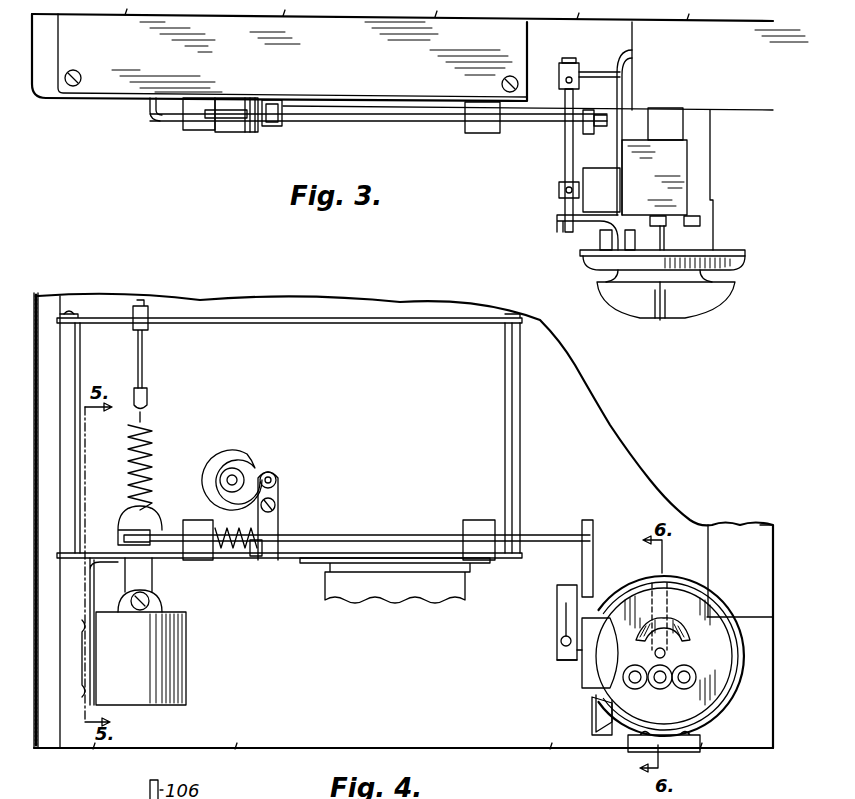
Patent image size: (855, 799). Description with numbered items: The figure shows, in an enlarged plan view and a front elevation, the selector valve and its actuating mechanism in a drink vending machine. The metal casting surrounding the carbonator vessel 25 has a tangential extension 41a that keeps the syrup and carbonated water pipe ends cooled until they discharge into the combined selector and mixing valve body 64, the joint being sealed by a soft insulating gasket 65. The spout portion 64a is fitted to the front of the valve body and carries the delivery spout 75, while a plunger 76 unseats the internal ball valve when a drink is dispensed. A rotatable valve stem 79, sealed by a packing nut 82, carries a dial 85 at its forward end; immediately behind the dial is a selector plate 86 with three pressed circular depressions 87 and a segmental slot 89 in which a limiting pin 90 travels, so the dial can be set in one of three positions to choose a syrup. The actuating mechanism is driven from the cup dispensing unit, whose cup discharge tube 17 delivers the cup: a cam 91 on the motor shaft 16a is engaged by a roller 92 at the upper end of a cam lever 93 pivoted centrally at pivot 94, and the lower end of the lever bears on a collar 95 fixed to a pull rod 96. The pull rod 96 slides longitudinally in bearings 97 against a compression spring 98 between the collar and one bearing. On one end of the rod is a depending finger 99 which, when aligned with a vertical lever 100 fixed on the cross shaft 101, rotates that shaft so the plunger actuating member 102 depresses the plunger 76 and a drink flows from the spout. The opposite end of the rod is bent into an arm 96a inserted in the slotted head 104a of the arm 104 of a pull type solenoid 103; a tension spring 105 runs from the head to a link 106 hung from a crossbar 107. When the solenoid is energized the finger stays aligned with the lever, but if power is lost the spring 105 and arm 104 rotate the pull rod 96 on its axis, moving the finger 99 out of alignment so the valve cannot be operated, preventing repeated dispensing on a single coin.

In FIG. 3, the motor shaft 16a is at (238, 140).
In FIG. 4, the motor shaft 16a is at (240, 478).
In FIG. 4, the cup discharge tube 17 is at (348, 596).
In FIG. 4, the carbonator vessel 25 is at (736, 535).
In FIG. 3, the tangential extension 41a is at (712, 98).
In FIG. 4, the tangential extension 41a is at (637, 742).
In FIG. 3, the selector and mixing valve body 64 is at (681, 162).
In FIG. 3, the spout portion 64a is at (596, 204).
In FIG. 4, the spout portion 64a is at (588, 682).
In FIG. 3, the gasket 65 is at (672, 118).
In FIG. 4, the delivery spout 75 is at (597, 720).
In FIG. 3, the plunger 76 is at (588, 196).
In FIG. 4, the plunger 76 is at (583, 669).
In FIG. 3, the valve stem 79 is at (668, 238).
In FIG. 4, the valve stem 79 is at (654, 654).
In FIG. 3, the packing nut 82 is at (678, 220).
In FIG. 3, the dial 85 is at (688, 298).
In FIG. 3, the selector plate 86 is at (741, 253).
In FIG. 4, the selector plate 86 is at (720, 666).
In FIG. 3, the circular depressions 87 is at (700, 249).
In FIG. 4, the circular depressions 87 is at (680, 664).
In FIG. 4, the segmental slot 89 is at (674, 634).
In FIG. 3, the limiting pin 90 is at (629, 237).
In FIG. 3, the cam 91 is at (232, 108).
In FIG. 4, the cam 91 is at (220, 456).
In FIG. 3, the roller 92 is at (279, 121).
In FIG. 4, the roller 92 is at (279, 478).
In FIG. 4, the cam lever 93 is at (280, 519).
In FIG. 4, the pivot 94 is at (278, 503).
In FIG. 4, the collar 95 is at (252, 556).
In FIG. 3, the pull rod 96 is at (340, 117).
In FIG. 4, the pull rod 96 is at (366, 535).
In FIG. 3, the bent end arm 96a is at (150, 104).
In FIG. 3, the bearings 97 is at (195, 130).
In FIG. 4, the bearings 97 is at (193, 524).
In FIG. 4, the compression spring 98 is at (226, 552).
In FIG. 3, the finger 99 is at (590, 130).
In FIG. 4, the finger 99 is at (593, 579).
In FIG. 3, the vertical lever 100 is at (562, 126).
In FIG. 4, the vertical lever 100 is at (559, 590).
In FIG. 3, the cross shaft 101 is at (566, 162).
In FIG. 4, the cross shaft 101 is at (561, 641).
In FIG. 3, the plunger actuating member 102 is at (559, 190).
In FIG. 4, the plunger actuating member 102 is at (566, 662).
In FIG. 4, the pull type solenoid 103 is at (187, 660).
In FIG. 4, the solenoid arm 104 is at (152, 577).
In FIG. 4, the slotted head 104a is at (130, 526).
In FIG. 4, the tension spring 105 is at (151, 458).
In FIG. 4, the link 106 is at (143, 368).
In FIG. 4, the crossbar 107 is at (265, 323).